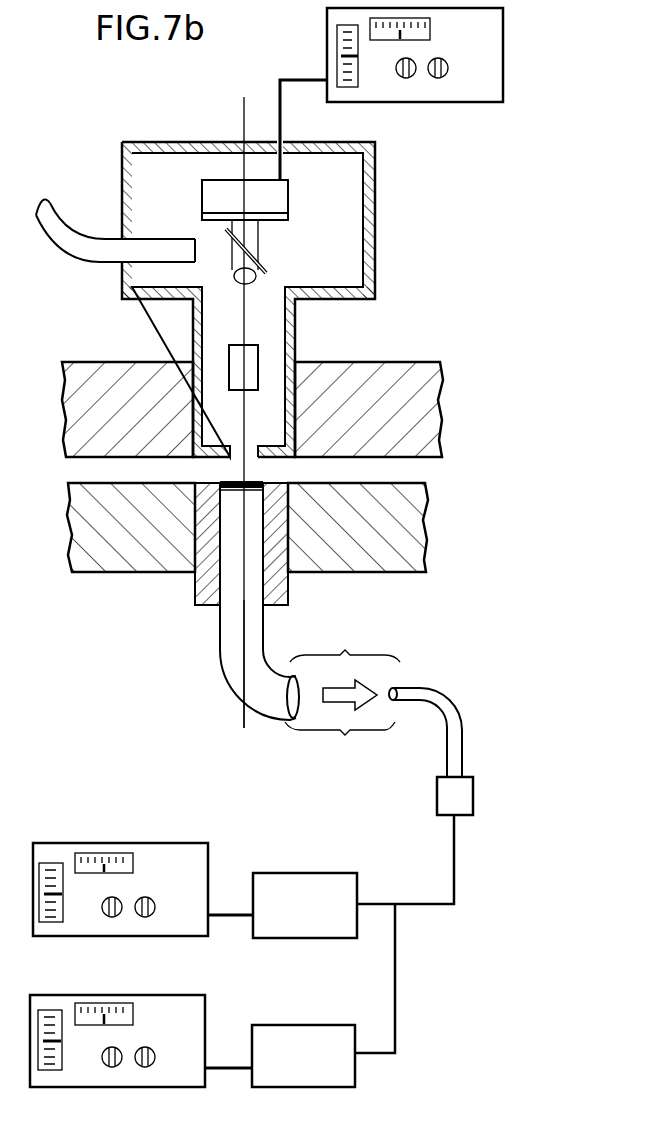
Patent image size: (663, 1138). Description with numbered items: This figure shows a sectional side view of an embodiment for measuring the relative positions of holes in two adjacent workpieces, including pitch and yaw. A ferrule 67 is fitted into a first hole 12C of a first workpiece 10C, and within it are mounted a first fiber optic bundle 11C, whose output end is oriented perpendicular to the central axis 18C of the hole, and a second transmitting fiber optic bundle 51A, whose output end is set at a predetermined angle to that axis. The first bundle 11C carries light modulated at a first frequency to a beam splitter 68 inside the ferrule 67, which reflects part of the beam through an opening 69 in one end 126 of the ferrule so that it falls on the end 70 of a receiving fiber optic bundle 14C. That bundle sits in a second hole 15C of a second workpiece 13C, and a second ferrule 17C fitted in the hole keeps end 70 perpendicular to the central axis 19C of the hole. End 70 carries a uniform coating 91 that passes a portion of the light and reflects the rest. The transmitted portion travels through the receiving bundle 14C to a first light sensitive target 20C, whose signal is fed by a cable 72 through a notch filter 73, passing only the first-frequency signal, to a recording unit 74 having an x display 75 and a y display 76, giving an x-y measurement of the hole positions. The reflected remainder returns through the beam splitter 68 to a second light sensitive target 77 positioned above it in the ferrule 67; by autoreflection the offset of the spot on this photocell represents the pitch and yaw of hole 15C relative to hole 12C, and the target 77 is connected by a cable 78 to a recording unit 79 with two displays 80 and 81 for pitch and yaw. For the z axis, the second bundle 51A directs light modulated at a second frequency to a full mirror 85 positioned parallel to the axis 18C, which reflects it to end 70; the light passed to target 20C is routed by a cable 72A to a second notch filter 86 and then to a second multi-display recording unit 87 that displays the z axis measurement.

The first workpiece 10C is at (90, 362).
The first fiber optic bundle 11C is at (66, 254).
The first hole 12C is at (195, 362).
The second workpiece 13C is at (125, 575).
The receiving fiber optic bundle 14C is at (220, 662).
The second hole 15C is at (190, 580).
The second ferrule 17C is at (289, 588).
The central axis 18C is at (244, 114).
The central axis 19C is at (243, 712).
The first light sensitive target 20C is at (437, 805).
The second transmitting fiber optic bundle 51A is at (258, 232).
The ferrule 67 is at (377, 232).
The beam splitter 68 is at (268, 265).
The opening 69 is at (254, 448).
The end of receiving fiber optic bundle 70 is at (232, 480).
The cable 72 is at (454, 868).
The cable 72A is at (395, 993).
The notch filter 73 is at (333, 873).
The recording unit 74 is at (117, 843).
The x display 75 is at (134, 866).
The y display 76 is at (62, 897).
The second light sensitive target 77 is at (203, 218).
The cable 78 is at (300, 78).
The recording unit 79 is at (446, 103).
The display 80 is at (430, 33).
The display 81 is at (357, 63).
The full mirror 85 is at (230, 356).
The second notch filter 86 is at (327, 1087).
The second multi-display recording unit 87 is at (140, 995).
The uniform coating 91 is at (242, 485).
The end of ferrule 126 is at (287, 460).